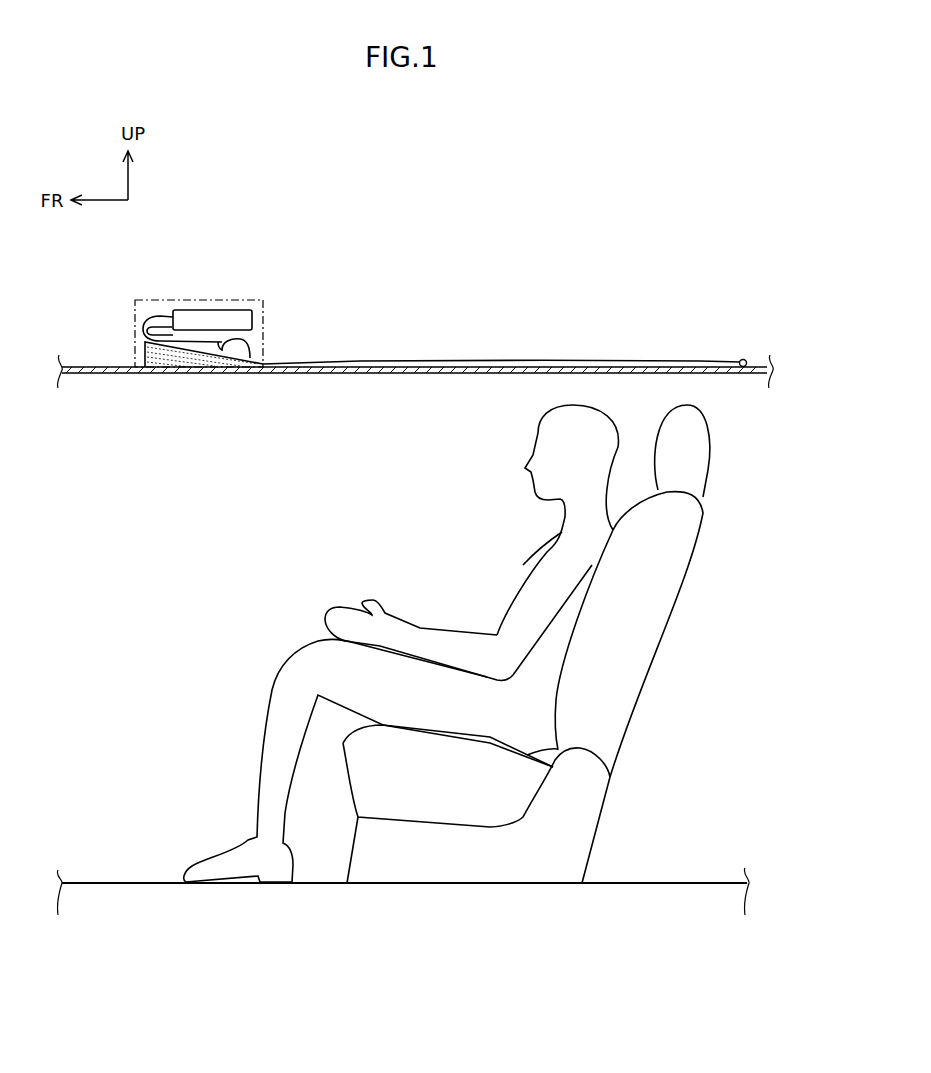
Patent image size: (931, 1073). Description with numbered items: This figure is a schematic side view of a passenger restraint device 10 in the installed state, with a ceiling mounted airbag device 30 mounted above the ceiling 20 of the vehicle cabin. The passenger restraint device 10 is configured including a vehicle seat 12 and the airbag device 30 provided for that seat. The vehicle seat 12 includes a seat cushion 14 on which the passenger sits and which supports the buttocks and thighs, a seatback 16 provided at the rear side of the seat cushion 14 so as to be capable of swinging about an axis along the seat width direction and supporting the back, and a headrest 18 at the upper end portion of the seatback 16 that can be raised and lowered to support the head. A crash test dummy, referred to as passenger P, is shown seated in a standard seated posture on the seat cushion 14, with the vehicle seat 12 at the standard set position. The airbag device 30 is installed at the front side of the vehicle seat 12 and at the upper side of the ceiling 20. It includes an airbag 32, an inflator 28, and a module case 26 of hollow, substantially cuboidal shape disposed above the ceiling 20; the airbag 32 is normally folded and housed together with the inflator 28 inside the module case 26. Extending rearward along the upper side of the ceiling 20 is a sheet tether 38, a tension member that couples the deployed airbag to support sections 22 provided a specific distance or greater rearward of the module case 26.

The passenger restraint device 10 is at (291, 296).
The vehicle seat 12 is at (733, 456).
The seat cushion 14 is at (435, 793).
The seatback 16 is at (627, 635).
The headrest 18 is at (693, 468).
The ceiling 20 is at (379, 386).
The support sections 22 is at (743, 359).
The module case 26 is at (224, 300).
The inflator 28 is at (230, 318).
The ceiling mounted airbag device 30 is at (273, 350).
The airbag 32 is at (162, 364).
The sheet tether 38 is at (593, 359).
The passenger P is at (508, 551).